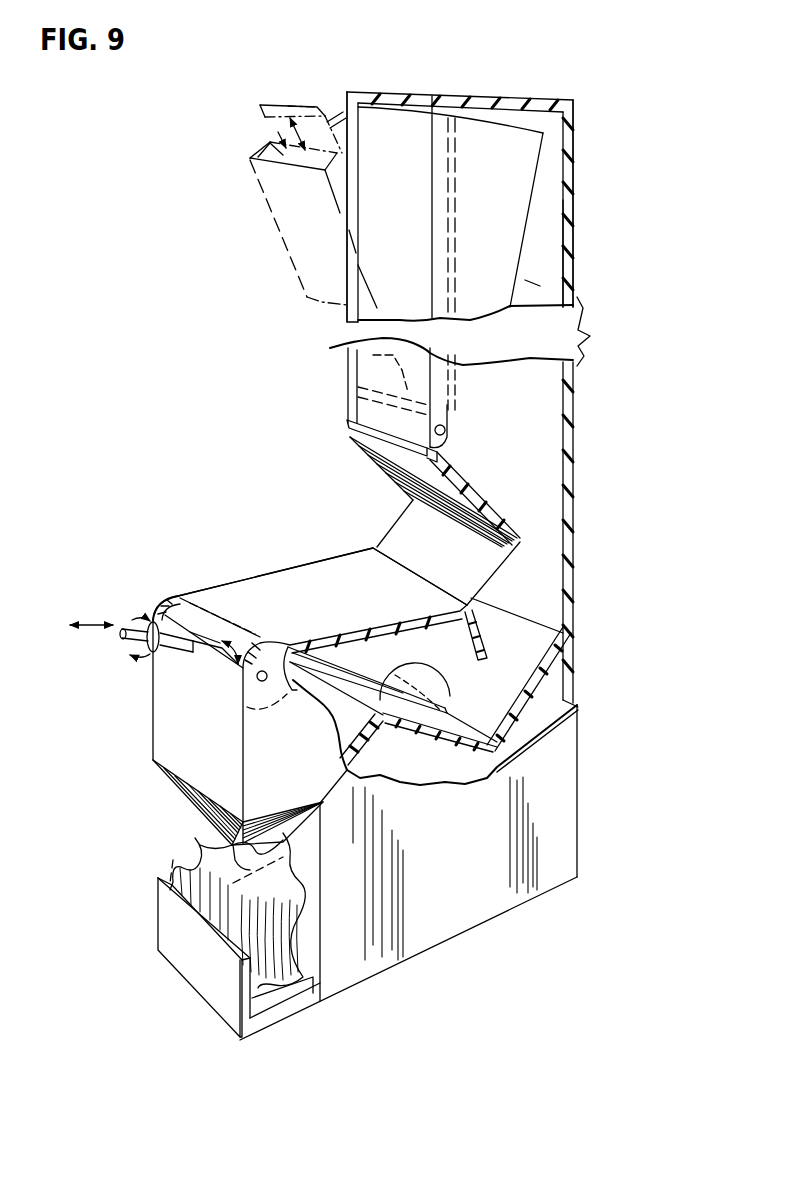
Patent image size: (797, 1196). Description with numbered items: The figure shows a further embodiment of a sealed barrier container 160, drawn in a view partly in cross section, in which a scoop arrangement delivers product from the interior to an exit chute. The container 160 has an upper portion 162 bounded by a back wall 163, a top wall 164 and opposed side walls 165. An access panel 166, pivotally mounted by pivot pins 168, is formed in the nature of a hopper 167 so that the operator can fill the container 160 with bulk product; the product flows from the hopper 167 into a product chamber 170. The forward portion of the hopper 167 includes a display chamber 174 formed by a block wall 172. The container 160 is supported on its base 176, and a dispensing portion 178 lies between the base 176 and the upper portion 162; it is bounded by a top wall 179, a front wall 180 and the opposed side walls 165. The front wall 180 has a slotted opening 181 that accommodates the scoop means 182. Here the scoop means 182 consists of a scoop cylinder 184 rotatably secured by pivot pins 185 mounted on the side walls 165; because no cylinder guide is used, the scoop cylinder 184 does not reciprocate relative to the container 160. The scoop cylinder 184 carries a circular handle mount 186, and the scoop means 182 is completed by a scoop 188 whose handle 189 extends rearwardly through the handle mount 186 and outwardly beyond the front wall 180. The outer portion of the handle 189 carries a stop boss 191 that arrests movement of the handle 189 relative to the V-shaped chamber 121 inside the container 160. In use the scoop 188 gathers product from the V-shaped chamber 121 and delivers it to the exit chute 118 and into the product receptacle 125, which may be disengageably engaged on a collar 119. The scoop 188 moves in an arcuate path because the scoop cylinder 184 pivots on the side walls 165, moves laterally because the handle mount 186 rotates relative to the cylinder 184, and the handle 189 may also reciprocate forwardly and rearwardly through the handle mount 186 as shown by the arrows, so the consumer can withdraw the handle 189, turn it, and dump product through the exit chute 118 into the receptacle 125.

The exit chute 118 is at (185, 825).
The collar 119 is at (175, 866).
The V-shaped chamber 121 is at (497, 702).
The product receptacle 125 is at (273, 980).
The sealed barrier container 160 is at (550, 85).
The upper portion 162 is at (583, 198).
The back wall 163 is at (573, 252).
The top wall 164 is at (433, 96).
The opposed side walls 165 is at (347, 100).
The access panel 166 is at (262, 197).
The hopper 167 is at (517, 167).
The pivot pins 168 is at (447, 432).
The product chamber 170 is at (533, 283).
The block wall 172 is at (273, 100).
The display chamber 174 is at (282, 150).
The base 176 is at (410, 957).
The dispensing portion 178 is at (235, 573).
The top wall 179 is at (323, 568).
The front wall 180 is at (178, 731).
The slotted opening 181 is at (172, 600).
The scoop means 182 is at (160, 613).
The scoop cylinder 184 is at (177, 767).
The pivot pins 185 is at (264, 686).
The circular handle mount 186 is at (203, 648).
The scoop 188 is at (457, 700).
The handle 189 is at (357, 688).
The stop boss 191 is at (155, 652).